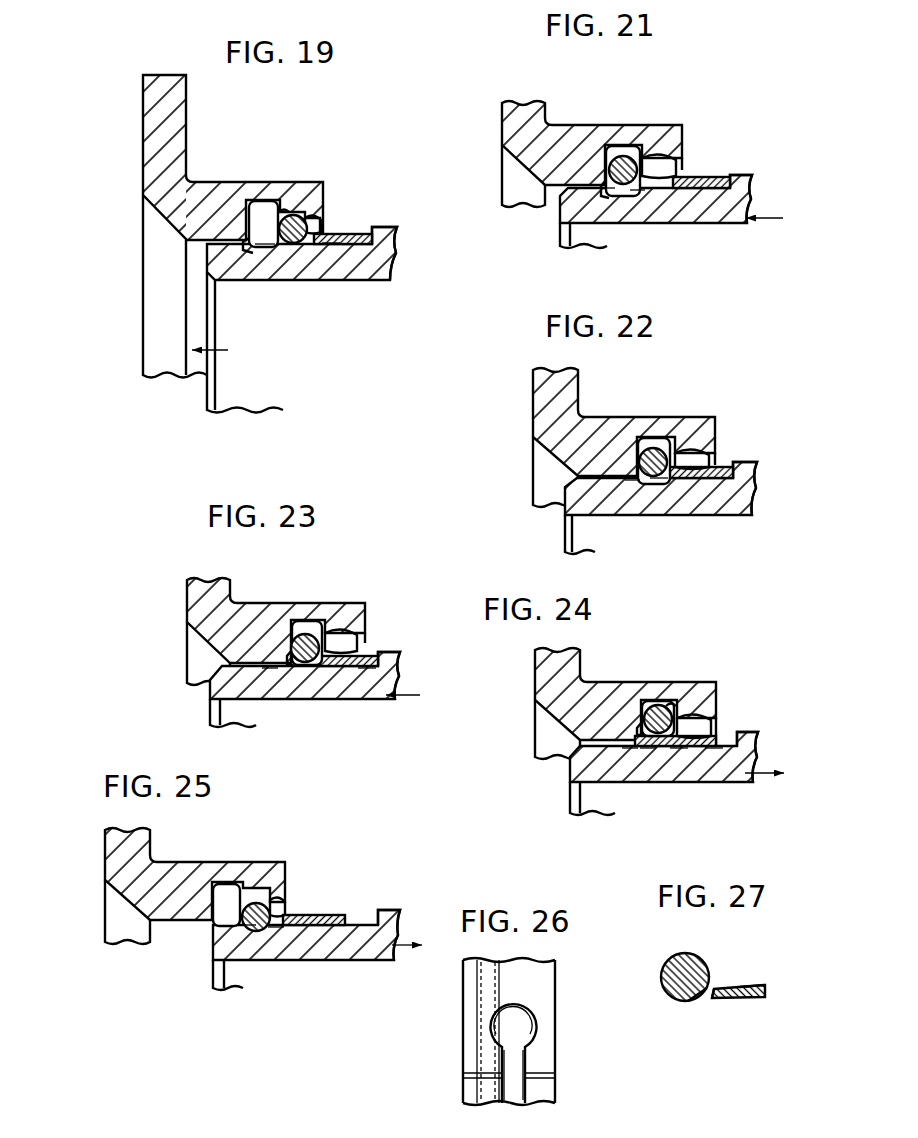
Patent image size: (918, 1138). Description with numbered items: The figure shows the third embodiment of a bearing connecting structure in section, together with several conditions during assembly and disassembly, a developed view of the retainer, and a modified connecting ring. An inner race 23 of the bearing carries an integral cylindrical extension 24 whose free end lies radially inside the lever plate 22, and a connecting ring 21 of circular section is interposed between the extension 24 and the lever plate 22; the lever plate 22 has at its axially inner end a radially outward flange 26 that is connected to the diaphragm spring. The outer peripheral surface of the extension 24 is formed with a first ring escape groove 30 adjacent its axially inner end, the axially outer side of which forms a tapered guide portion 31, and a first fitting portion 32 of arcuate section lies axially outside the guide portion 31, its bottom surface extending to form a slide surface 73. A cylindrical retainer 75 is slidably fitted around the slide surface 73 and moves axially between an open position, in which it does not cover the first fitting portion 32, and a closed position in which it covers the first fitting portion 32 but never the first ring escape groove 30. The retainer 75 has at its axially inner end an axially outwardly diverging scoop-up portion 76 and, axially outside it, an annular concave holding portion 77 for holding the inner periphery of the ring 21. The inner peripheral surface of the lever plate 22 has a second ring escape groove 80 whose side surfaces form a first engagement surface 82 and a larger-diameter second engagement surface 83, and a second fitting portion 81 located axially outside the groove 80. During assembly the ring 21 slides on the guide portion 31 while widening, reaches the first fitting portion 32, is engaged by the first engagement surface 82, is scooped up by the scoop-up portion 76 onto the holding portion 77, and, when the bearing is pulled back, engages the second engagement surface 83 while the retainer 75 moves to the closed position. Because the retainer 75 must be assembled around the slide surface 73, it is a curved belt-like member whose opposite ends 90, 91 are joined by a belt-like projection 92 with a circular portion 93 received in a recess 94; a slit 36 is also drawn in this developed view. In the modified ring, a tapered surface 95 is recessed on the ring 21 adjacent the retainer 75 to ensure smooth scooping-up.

In FIG. 19, the connecting ring 21 is at (301, 216).
In FIG. 21, the connecting ring 21 is at (635, 152).
In FIG. 22, the connecting ring 21 is at (666, 444).
In FIG. 23, the connecting ring 21 is at (318, 628).
In FIG. 24, the connecting ring 21 is at (653, 701).
In FIG. 25, the connecting ring 21 is at (248, 903).
In FIG. 27, the connecting ring 21 is at (670, 956).
In FIG. 19, the lever plate 22 is at (142, 196).
In FIG. 21, the lever plate 22 is at (500, 130).
In FIG. 22, the lever plate 22 is at (530, 410).
In FIG. 23, the lever plate 22 is at (185, 611).
In FIG. 24, the lever plate 22 is at (532, 680).
In FIG. 25, the lever plate 22 is at (102, 869).
In FIG. 19, the inner race 23 is at (393, 224).
In FIG. 21, the inner race 23 is at (750, 172).
In FIG. 22, the inner race 23 is at (740, 462).
In FIG. 23, the inner race 23 is at (394, 650).
In FIG. 24, the inner race 23 is at (752, 740).
In FIG. 25, the inner race 23 is at (390, 908).
In FIG. 19, the cylindrical extension 24 is at (200, 272).
In FIG. 21, the cylindrical extension 24 is at (556, 218).
In FIG. 22, the cylindrical extension 24 is at (558, 516).
In FIG. 23, the cylindrical extension 24 is at (206, 682).
In FIG. 24, the cylindrical extension 24 is at (562, 770).
In FIG. 25, the cylindrical extension 24 is at (210, 964).
In FIG. 19, the radially outward flange 26 is at (150, 118).
In FIG. 19, the first ring escape groove 30 is at (246, 246).
In FIG. 21, the first ring escape groove 30 is at (612, 198).
In FIG. 22, the first ring escape groove 30 is at (604, 491).
In FIG. 23, the first ring escape groove 30 is at (246, 679).
In FIG. 24, the first ring escape groove 30 is at (607, 760).
In FIG. 25, the first ring escape groove 30 is at (250, 942).
In FIG. 19, the tapered guide portion 31 is at (270, 246).
In FIG. 21, the tapered guide portion 31 is at (639, 198).
In FIG. 22, the tapered guide portion 31 is at (628, 488).
In FIG. 23, the tapered guide portion 31 is at (270, 673).
In FIG. 24, the tapered guide portion 31 is at (630, 754).
In FIG. 25, the tapered guide portion 31 is at (277, 939).
In FIG. 19, the first fitting portion 32 is at (292, 246).
In FIG. 21, the first fitting portion 32 is at (668, 192).
In FIG. 22, the first fitting portion 32 is at (655, 486).
In FIG. 23, the first fitting portion 32 is at (298, 673).
In FIG. 24, the first fitting portion 32 is at (648, 753).
In FIG. 25, the first fitting portion 32 is at (303, 935).
In FIG. 26, the slit 36 is at (467, 1026).
In FIG. 19, the slide surface 73 is at (356, 248).
In FIG. 21, the slide surface 73 is at (702, 194).
In FIG. 22, the slide surface 73 is at (710, 480).
In FIG. 23, the slide surface 73 is at (371, 681).
In FIG. 24, the slide surface 73 is at (714, 748).
In FIG. 25, the slide surface 73 is at (331, 928).
In FIG. 19, the retainer 75 is at (354, 230).
In FIG. 21, the retainer 75 is at (708, 174).
In FIG. 22, the retainer 75 is at (726, 460).
In FIG. 23, the retainer 75 is at (376, 651).
In FIG. 24, the retainer 75 is at (718, 736).
In FIG. 25, the retainer 75 is at (315, 910).
In FIG. 26, the retainer 75 is at (560, 975).
In FIG. 27, the retainer 75 is at (748, 1000).
In FIG. 19, the scoop-up portion 76 is at (306, 246).
In FIG. 23, the scoop-up portion 76 is at (330, 671).
In FIG. 27, the scoop-up portion 76 is at (716, 986).
In FIG. 19, the holding portion 77 is at (332, 246).
In FIG. 24, the holding portion 77 is at (678, 750).
In FIG. 26, the holding portion 77 is at (480, 985).
In FIG. 27, the holding portion 77 is at (742, 986).
In FIG. 19, the second ring escape groove 80 is at (268, 197).
In FIG. 21, the second ring escape groove 80 is at (625, 142).
In FIG. 22, the second ring escape groove 80 is at (646, 435).
In FIG. 23, the second ring escape groove 80 is at (306, 618).
In FIG. 24, the second ring escape groove 80 is at (664, 698).
In FIG. 25, the second ring escape groove 80 is at (222, 880).
In FIG. 19, the second fitting portion 81 is at (323, 216).
In FIG. 21, the second fitting portion 81 is at (674, 160).
In FIG. 22, the second fitting portion 81 is at (700, 448).
In FIG. 23, the second fitting portion 81 is at (342, 637).
In FIG. 24, the second fitting portion 81 is at (694, 718).
In FIG. 25, the second fitting portion 81 is at (268, 898).
In FIG. 19, the first engagement surface 82 is at (251, 218).
In FIG. 21, the first engagement surface 82 is at (604, 175).
In FIG. 23, the first engagement surface 82 is at (286, 633).
In FIG. 24, the first engagement surface 82 is at (638, 731).
In FIG. 19, the second engagement surface 83 is at (283, 190).
In FIG. 24, the second engagement surface 83 is at (681, 697).
In FIG. 26, the end of retainer 90 is at (544, 1081).
In FIG. 26, the end of retainer 91 is at (548, 1062).
In FIG. 26, the belt-like projection 92 is at (520, 1054).
In FIG. 26, the circular portion 93 is at (532, 1025).
In FIG. 26, the recess 94 is at (527, 1010).
In FIG. 27, the tapered surface 95 is at (696, 1000).